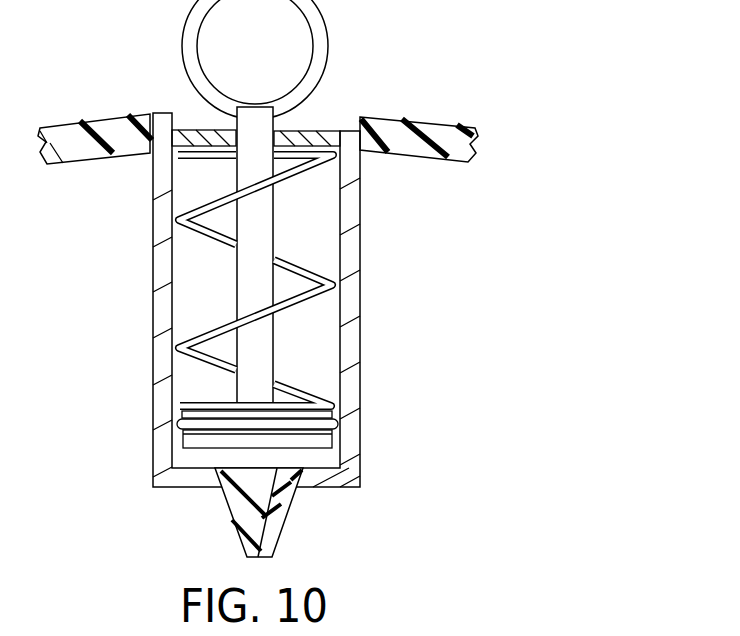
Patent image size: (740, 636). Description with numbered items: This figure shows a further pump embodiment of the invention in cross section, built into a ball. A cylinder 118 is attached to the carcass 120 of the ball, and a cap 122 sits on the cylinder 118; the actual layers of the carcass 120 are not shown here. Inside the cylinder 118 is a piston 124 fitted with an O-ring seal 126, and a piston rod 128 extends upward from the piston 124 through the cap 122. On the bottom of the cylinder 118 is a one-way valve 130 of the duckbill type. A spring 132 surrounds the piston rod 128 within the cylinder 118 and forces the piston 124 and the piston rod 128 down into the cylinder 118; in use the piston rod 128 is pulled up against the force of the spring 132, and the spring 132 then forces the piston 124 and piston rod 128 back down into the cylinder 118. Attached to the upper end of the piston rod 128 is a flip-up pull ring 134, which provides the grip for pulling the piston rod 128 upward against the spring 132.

The cylinder 118 is at (352, 240).
The carcass 120 is at (438, 130).
The cap 122 is at (320, 133).
The piston 124 is at (322, 440).
The O-ring seal 126 is at (177, 423).
The piston rod 128 is at (263, 349).
The one-way valve 130 is at (283, 527).
The spring 132 is at (334, 301).
The flip-up pull ring 134 is at (318, 47).